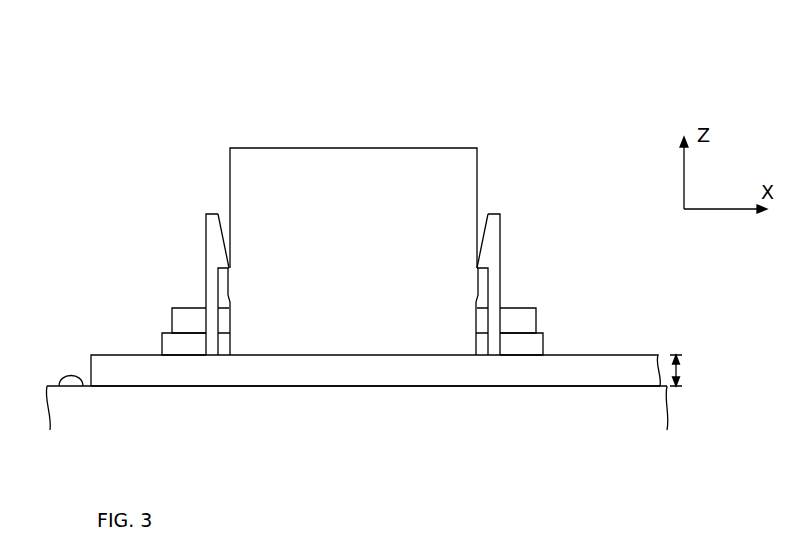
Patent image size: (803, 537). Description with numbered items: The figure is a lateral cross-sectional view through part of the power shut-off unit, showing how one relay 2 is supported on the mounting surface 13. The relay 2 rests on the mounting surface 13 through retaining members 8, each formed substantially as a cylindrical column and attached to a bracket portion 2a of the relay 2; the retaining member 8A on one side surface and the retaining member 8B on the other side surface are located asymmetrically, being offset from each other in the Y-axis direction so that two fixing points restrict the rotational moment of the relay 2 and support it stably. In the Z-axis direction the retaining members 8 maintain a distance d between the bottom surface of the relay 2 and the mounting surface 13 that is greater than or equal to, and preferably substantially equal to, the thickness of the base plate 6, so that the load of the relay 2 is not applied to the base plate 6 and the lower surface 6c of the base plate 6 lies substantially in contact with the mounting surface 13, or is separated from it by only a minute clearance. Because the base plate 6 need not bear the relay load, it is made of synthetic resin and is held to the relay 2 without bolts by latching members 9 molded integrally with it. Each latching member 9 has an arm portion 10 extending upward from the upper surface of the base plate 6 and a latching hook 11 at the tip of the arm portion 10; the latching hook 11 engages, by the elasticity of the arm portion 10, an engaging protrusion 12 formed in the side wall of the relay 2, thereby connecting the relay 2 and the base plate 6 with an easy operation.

The relay 2 is at (367, 160).
The bracket portion 2a is at (160, 342).
The base plate 6 is at (370, 370).
The lower surface of the base plate 6c is at (270, 386).
The retaining member 8 is at (355, 318).
The retaining member 8A is at (180, 327).
The retaining member 8B is at (537, 324).
The latching member 9 is at (352, 232).
The arm portion 10 is at (212, 282).
The latching hook 11 is at (221, 251).
The engaging protrusion 12 is at (227, 280).
The mounting surface 13 is at (63, 387).
The distance d is at (683, 370).